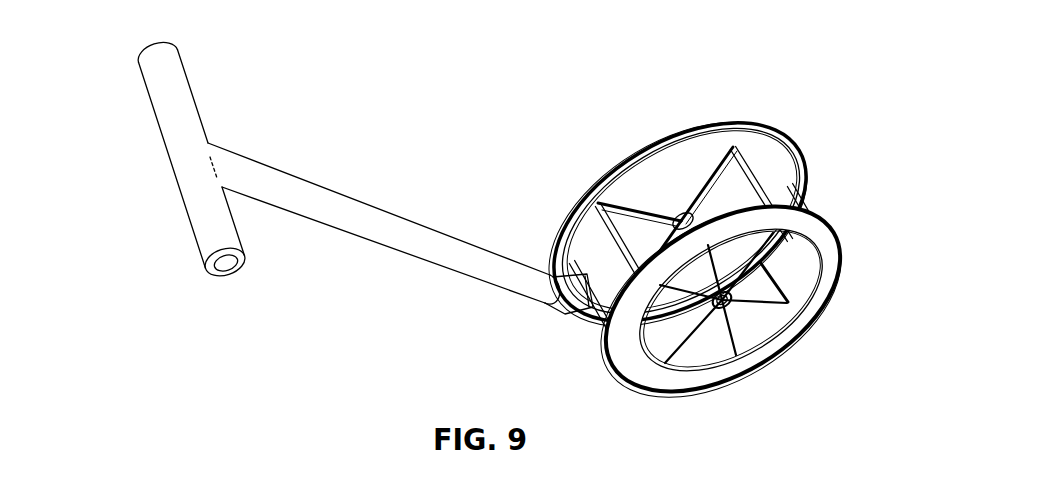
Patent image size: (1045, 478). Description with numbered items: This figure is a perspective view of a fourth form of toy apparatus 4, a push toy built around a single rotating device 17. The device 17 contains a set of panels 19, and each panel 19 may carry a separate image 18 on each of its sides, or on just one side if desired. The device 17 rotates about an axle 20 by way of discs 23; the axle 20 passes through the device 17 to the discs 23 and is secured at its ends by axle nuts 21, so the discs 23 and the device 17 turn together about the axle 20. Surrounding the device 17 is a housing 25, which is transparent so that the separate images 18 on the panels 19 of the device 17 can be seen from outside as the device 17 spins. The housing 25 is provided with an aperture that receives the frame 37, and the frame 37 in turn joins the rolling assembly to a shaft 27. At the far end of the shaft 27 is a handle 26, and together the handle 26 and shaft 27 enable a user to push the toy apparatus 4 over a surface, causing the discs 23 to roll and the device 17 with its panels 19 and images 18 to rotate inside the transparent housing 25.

The toy apparatus 4 is at (490, 218).
The device 17 is at (712, 243).
The separate image 18 is at (648, 253).
The panel 19 is at (753, 170).
The axle 20 is at (723, 302).
The axle nut 21 is at (730, 302).
The disc 23 is at (793, 275).
The housing 25 is at (792, 189).
The handle 26 is at (190, 161).
The shaft 27 is at (305, 208).
The frame 37 is at (578, 295).